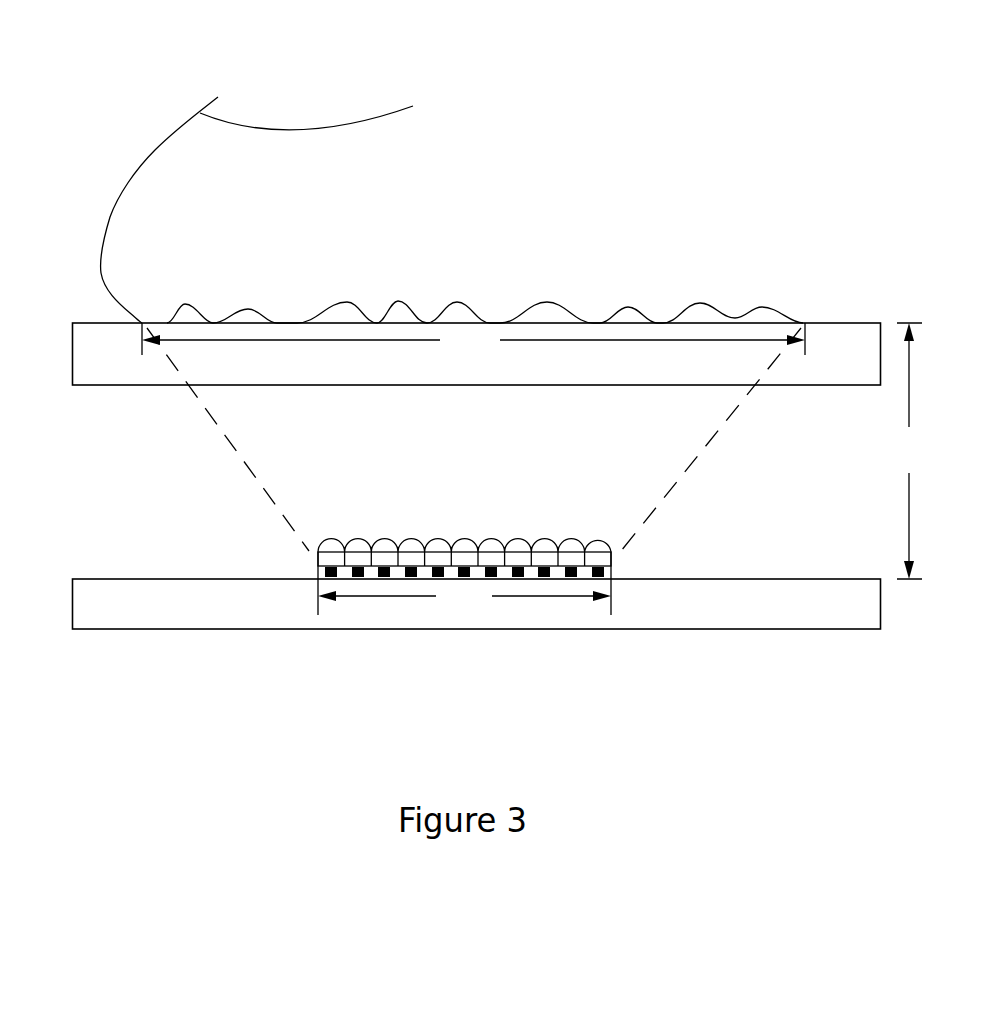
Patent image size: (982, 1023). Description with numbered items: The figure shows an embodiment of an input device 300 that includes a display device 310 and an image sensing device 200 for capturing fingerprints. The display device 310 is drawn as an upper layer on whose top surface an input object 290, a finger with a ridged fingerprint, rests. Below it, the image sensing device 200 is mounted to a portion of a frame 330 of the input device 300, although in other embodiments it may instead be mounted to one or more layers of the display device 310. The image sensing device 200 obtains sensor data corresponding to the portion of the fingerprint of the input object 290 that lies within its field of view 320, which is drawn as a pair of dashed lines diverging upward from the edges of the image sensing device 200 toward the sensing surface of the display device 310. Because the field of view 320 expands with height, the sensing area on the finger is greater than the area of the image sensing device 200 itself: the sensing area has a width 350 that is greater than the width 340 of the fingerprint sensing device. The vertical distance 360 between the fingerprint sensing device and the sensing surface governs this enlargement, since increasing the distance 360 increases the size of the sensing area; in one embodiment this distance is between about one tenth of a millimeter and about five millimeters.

The input device 300 is at (112, 62).
The input object 290 is at (140, 189).
The display device 310 is at (95, 341).
The field of view 320 is at (296, 458).
The image sensing device 200 is at (316, 563).
The frame 330 is at (95, 593).
The width of sensing area 350 is at (473, 339).
The width of fingerprint sensing device 340 is at (464, 583).
The distance 360 is at (904, 451).